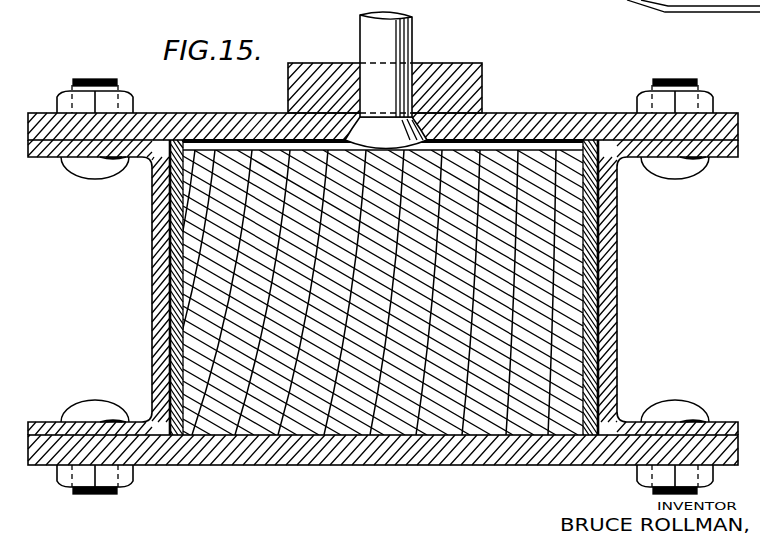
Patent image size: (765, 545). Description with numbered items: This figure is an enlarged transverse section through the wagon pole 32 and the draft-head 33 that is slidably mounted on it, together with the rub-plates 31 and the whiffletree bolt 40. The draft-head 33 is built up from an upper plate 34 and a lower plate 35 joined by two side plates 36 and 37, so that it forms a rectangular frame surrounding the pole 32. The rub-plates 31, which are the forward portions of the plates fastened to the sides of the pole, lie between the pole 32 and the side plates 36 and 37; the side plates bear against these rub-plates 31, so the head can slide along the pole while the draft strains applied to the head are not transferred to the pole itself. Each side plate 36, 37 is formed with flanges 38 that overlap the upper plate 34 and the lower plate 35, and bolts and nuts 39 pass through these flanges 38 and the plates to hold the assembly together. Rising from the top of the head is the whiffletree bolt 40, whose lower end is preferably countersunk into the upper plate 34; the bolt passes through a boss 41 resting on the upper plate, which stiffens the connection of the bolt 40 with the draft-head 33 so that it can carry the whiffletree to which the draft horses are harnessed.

The rub-plates 31 is at (173, 257).
The pole 32 is at (253, 227).
The draft-head 33 is at (233, 93).
The upper plate 34 is at (508, 114).
The lower plate 35 is at (322, 466).
The side plate 36 is at (155, 332).
The side plate 37 is at (607, 327).
The flanges 38 is at (711, 160).
The bolts and nuts 39 is at (121, 97).
The whiffletree bolt 40 is at (413, 40).
The boss 41 is at (472, 80).